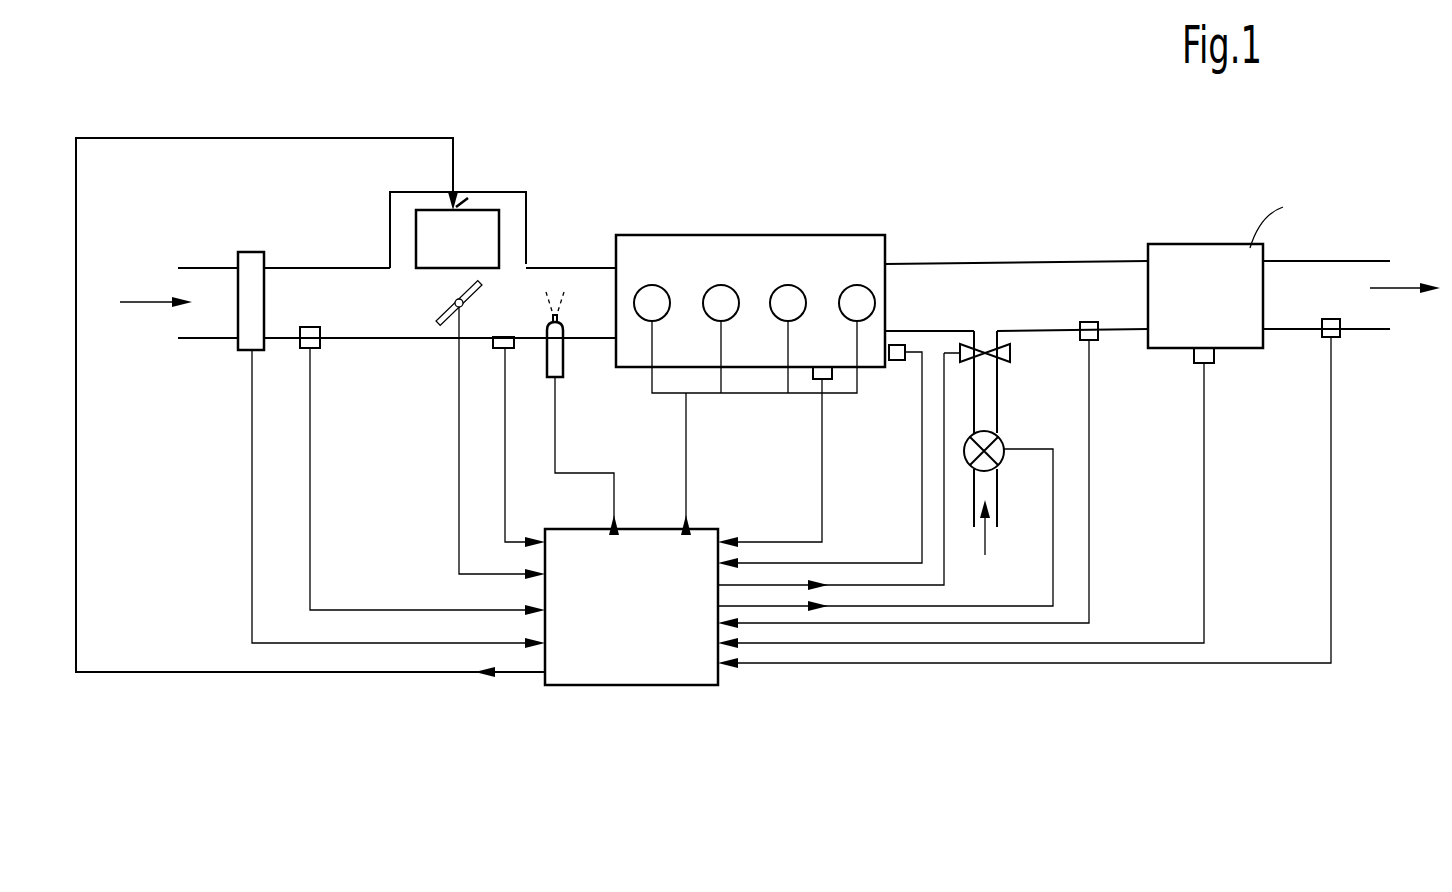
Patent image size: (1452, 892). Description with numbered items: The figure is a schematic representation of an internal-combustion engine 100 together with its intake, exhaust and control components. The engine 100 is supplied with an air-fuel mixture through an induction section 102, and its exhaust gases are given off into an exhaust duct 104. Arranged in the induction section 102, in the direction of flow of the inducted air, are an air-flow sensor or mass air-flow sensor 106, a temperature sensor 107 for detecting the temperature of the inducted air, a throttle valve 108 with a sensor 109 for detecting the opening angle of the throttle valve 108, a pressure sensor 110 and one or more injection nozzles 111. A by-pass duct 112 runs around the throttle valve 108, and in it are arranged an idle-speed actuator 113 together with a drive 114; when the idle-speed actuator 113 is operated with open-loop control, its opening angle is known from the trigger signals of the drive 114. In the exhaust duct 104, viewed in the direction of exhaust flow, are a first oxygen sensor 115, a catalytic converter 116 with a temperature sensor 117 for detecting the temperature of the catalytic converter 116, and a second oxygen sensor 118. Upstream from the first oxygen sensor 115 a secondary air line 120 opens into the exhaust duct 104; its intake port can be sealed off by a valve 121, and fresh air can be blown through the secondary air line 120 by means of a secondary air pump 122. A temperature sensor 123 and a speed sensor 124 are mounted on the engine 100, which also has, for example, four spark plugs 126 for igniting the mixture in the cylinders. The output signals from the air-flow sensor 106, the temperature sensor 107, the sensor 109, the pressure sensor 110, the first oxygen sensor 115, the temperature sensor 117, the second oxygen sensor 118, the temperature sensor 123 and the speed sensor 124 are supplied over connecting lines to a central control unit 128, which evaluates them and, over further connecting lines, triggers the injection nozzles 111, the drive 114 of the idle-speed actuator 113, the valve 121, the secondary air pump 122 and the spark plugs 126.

The internal-combustion engine 100 is at (805, 245).
The induction section 102 is at (324, 268).
The exhaust duct 104 is at (1020, 262).
The air-flow sensor or mass air-flow sensor 106 is at (251, 252).
The temperature sensor 107 is at (318, 348).
The throttle valve 108 is at (487, 253).
The sensor 109 is at (448, 304).
The pressure sensor 110 is at (498, 350).
The injection nozzle 111 is at (563, 372).
The by-pass duct 112 is at (526, 212).
The idle-speed actuator 113 is at (469, 198).
The drive 114 is at (452, 205).
The first oxygen sensor 115 is at (1096, 340).
The catalytic converter 116 is at (1222, 252).
The temperature sensor 117 is at (1210, 363).
The second oxygen sensor 118 is at (1336, 340).
The secondary air line 120 is at (998, 382).
The valve 121 is at (1012, 353).
The secondary air pump 122 is at (998, 466).
The temperature sensor 123 is at (818, 380).
The speed sensor 124 is at (893, 362).
The spark plugs 126 is at (651, 292).
The central control unit 128 is at (634, 670).